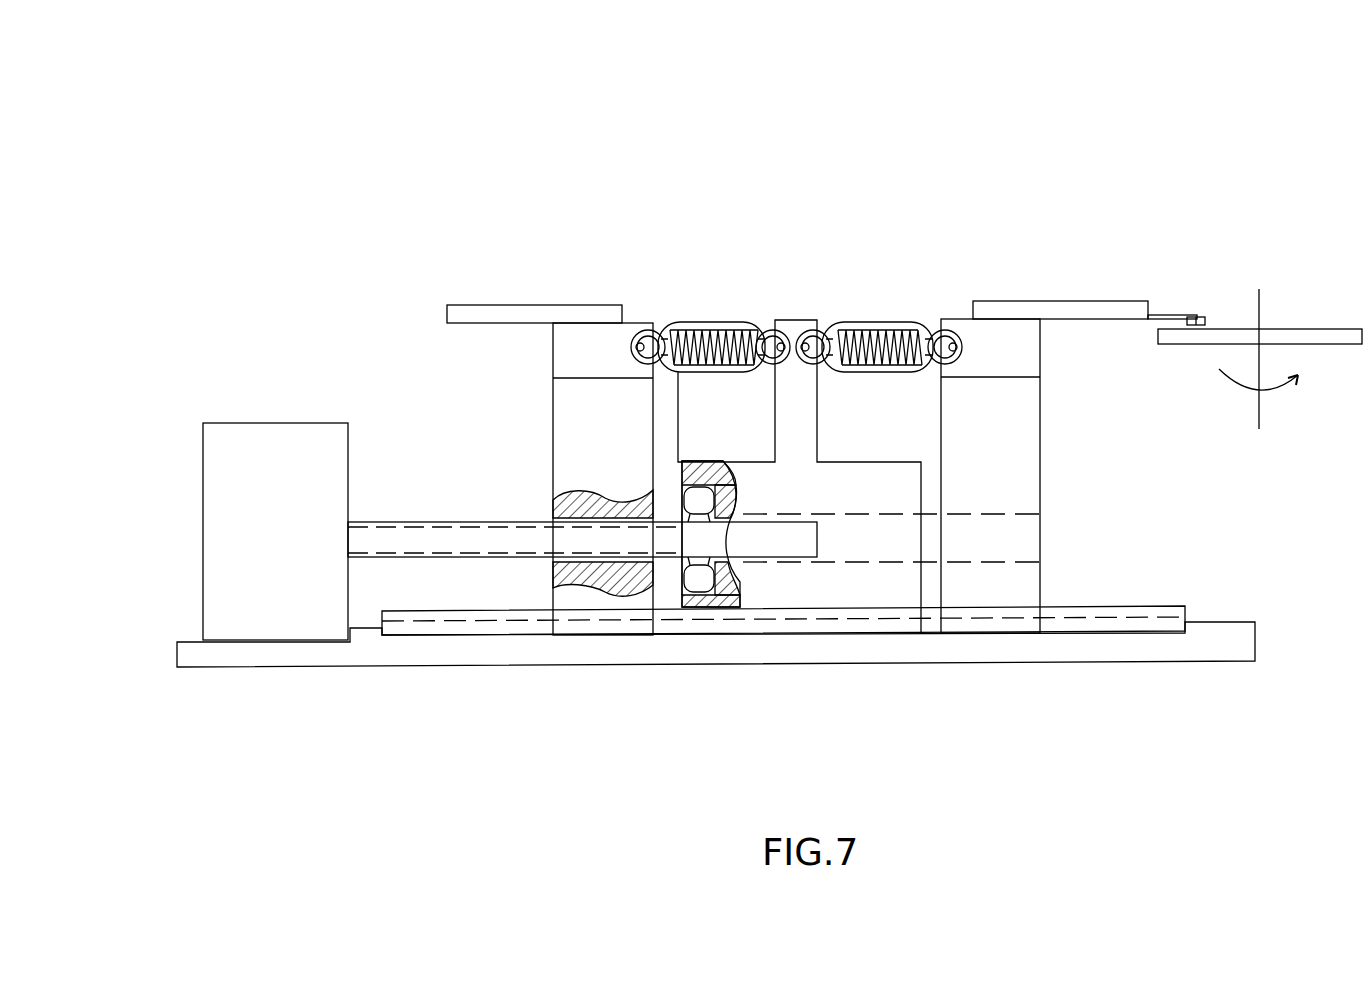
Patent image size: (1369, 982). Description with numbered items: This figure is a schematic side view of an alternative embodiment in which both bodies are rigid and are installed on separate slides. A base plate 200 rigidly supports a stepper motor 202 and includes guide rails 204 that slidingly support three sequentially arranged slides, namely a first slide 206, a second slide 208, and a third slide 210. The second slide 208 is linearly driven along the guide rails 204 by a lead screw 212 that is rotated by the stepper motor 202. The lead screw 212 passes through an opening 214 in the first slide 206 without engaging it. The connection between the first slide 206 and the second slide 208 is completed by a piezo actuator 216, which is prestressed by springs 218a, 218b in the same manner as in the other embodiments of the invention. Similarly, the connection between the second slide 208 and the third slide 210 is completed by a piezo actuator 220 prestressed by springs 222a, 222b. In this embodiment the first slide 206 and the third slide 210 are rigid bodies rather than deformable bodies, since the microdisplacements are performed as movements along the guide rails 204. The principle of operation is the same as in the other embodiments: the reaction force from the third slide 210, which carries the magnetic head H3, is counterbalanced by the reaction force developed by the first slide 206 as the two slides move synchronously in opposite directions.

The base plate 200 is at (982, 650).
The stepper motor 202 is at (280, 440).
The guide rails 204 is at (479, 627).
The first slide 206 is at (578, 408).
The second slide 208 is at (767, 593).
The third slide 210 is at (997, 397).
The lead screw 212 is at (405, 539).
The opening 214 is at (565, 487).
The piezo actuator 216 is at (750, 194).
The spring 218a is at (769, 265).
The spring 218b is at (722, 325).
The piezo actuator 220 is at (916, 201).
The spring 222a is at (937, 280).
The spring 222b is at (905, 325).
The magnetic head H3 is at (1198, 317).